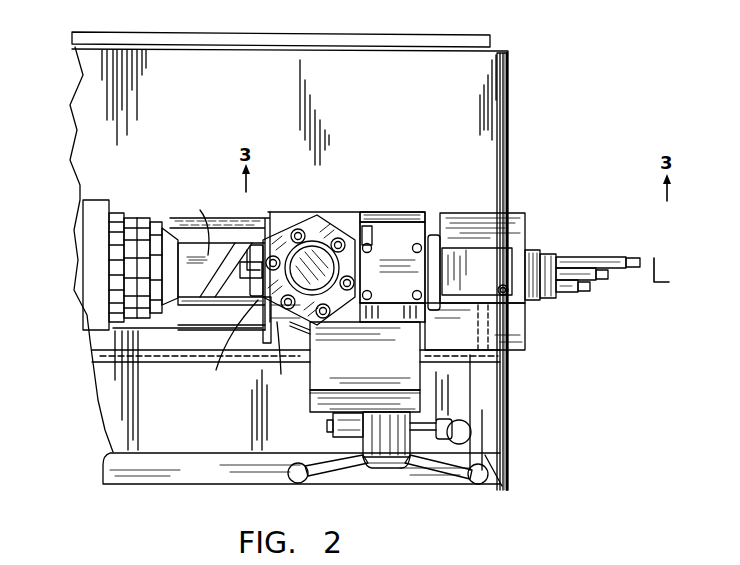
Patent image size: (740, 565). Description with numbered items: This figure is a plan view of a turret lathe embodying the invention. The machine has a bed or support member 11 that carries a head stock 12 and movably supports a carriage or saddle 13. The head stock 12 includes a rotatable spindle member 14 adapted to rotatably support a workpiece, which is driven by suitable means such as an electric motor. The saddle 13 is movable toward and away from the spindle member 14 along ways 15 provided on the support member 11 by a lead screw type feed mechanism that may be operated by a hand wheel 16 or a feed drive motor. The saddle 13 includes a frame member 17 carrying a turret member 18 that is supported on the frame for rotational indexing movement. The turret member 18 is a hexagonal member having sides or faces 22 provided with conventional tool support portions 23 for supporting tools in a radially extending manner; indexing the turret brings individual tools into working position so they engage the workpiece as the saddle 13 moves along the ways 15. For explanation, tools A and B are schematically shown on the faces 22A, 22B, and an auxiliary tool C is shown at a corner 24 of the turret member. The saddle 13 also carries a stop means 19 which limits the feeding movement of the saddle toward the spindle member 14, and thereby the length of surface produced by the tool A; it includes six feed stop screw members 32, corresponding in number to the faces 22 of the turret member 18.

The bed or support member 11 is at (124, 489).
The head stock 12 is at (92, 190).
The carriage or saddle 13 is at (445, 189).
The spindle member 14 is at (148, 222).
The ways 15 is at (210, 226).
The hand wheel 16 is at (450, 468).
The frame member 17 is at (399, 232).
The turret member 18 is at (320, 211).
The stop means 19 is at (542, 313).
The sides or faces 22 is at (300, 213).
The face 22A is at (261, 292).
The face 22B is at (290, 330).
The tool support portions 23 is at (358, 226).
The corner 24 is at (268, 303).
The feed stop screw members 32 is at (583, 273).
The tool A is at (200, 224).
The tool B is at (282, 357).
The auxiliary tool C is at (232, 340).